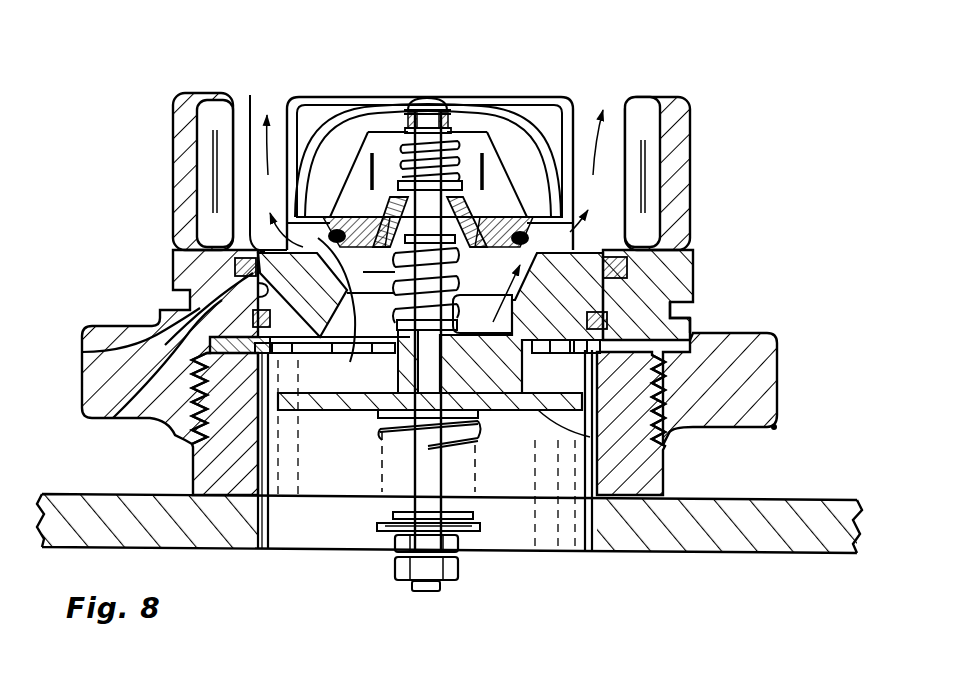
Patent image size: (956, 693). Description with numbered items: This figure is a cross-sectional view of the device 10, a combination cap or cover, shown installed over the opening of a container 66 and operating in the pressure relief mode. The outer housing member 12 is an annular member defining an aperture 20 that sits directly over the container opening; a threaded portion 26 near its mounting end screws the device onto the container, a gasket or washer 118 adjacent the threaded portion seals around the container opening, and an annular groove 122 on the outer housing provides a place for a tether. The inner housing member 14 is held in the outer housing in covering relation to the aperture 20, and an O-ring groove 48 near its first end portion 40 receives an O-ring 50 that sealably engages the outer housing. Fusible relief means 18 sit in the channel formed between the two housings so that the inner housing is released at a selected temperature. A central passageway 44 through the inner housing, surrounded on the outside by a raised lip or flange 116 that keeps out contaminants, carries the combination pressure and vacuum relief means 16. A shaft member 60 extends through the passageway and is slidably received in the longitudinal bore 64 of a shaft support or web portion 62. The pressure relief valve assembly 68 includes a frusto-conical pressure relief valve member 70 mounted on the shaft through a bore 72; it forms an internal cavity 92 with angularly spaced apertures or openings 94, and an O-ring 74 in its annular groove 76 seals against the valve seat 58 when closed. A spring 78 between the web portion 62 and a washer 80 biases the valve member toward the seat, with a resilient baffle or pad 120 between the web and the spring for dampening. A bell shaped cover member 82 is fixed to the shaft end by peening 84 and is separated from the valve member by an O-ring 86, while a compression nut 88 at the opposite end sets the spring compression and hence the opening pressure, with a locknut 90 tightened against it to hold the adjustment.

The device 10 is at (803, 395).
The outer housing member 12 is at (776, 427).
The inner housing member 14 is at (700, 430).
The combination pressure and vacuum relief means 16 is at (505, 131).
The fusible relief means 18 is at (233, 266).
The aperture 20 is at (189, 302).
The threaded portion 26 is at (206, 443).
The first end portion 40 is at (653, 370).
The passageway 44 is at (493, 267).
The O-ring groove 48 is at (84, 345).
The O-ring 50 is at (168, 420).
The valve seat 58 is at (628, 262).
The shaft member 60 is at (452, 591).
The shaft support or web portion 62 is at (500, 383).
The longitudinal bore 64 is at (415, 361).
The container 66 is at (662, 552).
The pressure relief valve assembly 68 is at (326, 97).
The pressure relief valve member 70 is at (357, 102).
The bore 72 is at (452, 100).
The O-ring 74 is at (427, 310).
The annular groove 76 is at (290, 247).
The spring 78 is at (382, 427).
The washer 80 is at (360, 530).
The cover member 82 is at (556, 98).
The peening 84 is at (424, 98).
The O-ring 86 is at (470, 112).
The compression nut 88 is at (483, 547).
The locknut 90 is at (377, 573).
The internal cavity 92 is at (497, 178).
The apertures or openings 94 is at (638, 99).
The raised lip or flange 116 is at (293, 100).
The gasket or washer 118 is at (698, 287).
The resilient baffle or pad 120 is at (600, 462).
The annular groove 122 is at (682, 314).